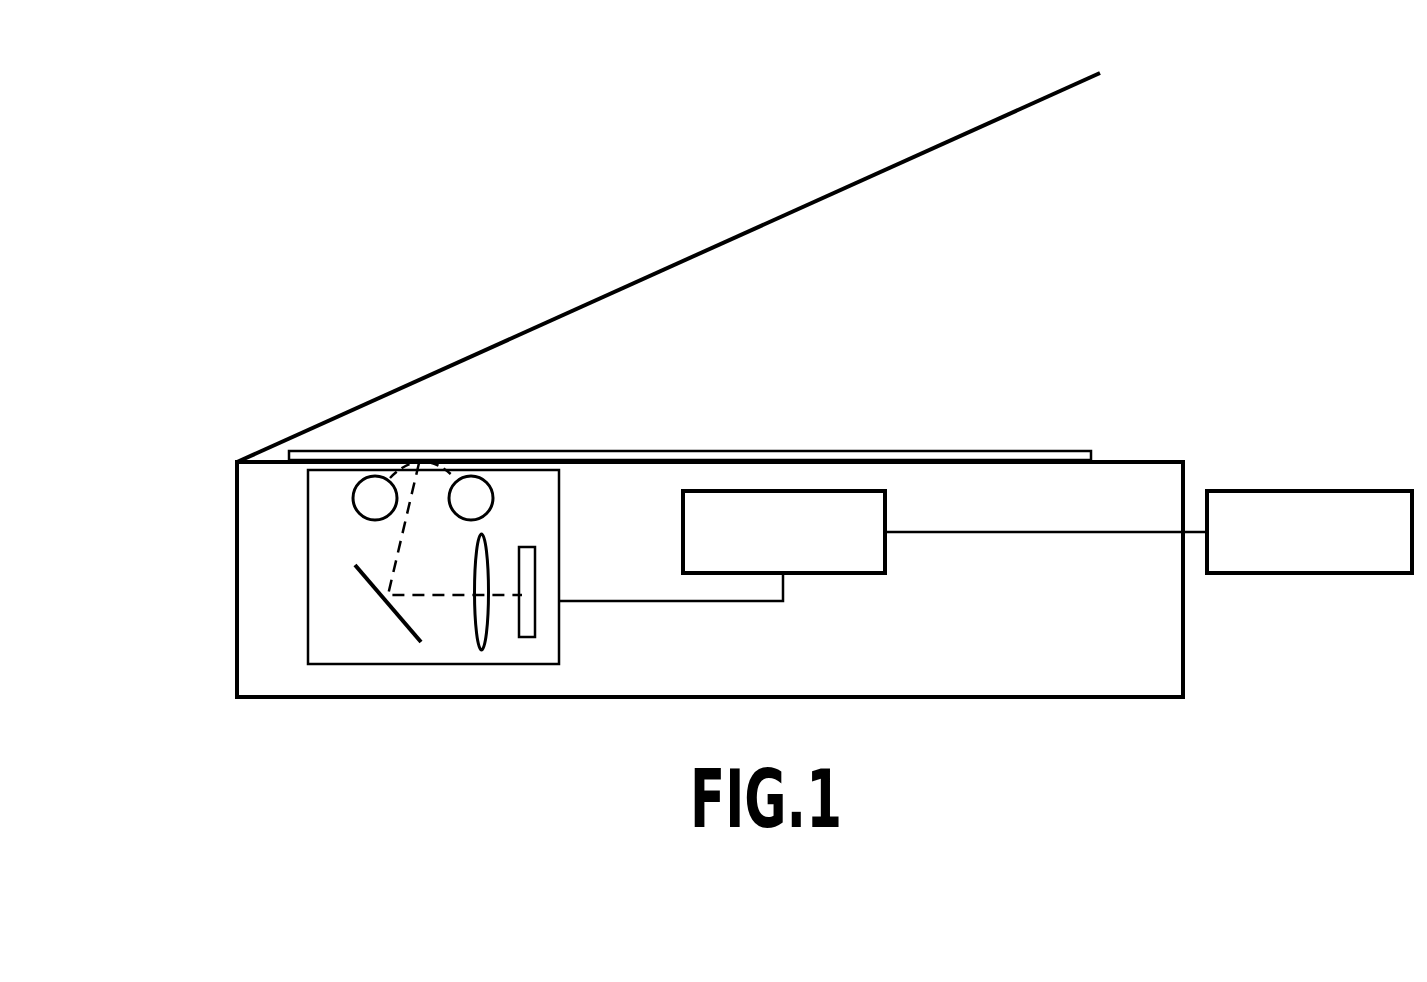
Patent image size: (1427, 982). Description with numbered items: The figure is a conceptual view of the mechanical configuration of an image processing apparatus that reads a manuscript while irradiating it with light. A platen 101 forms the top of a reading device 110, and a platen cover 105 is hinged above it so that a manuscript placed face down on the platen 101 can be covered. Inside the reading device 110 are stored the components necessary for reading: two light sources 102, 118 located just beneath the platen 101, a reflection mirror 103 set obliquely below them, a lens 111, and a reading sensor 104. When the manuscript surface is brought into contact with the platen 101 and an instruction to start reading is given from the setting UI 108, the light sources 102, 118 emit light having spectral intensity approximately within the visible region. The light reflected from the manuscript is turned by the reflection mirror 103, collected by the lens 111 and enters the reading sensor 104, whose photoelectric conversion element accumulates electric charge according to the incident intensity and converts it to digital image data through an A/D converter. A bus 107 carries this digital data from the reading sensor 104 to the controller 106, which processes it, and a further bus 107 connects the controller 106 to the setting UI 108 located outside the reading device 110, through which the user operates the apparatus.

The platen 101 is at (943, 453).
The light source 102 is at (483, 478).
The reflection mirror 103 is at (373, 583).
The reading sensor 104 is at (535, 617).
The platen cover 105 is at (908, 157).
The controller 106 is at (834, 575).
The bus 107 is at (599, 600).
The setting UI 108 is at (1310, 490).
The reading device 110 is at (308, 505).
The lens 111 is at (481, 640).
The light source 118 is at (365, 478).